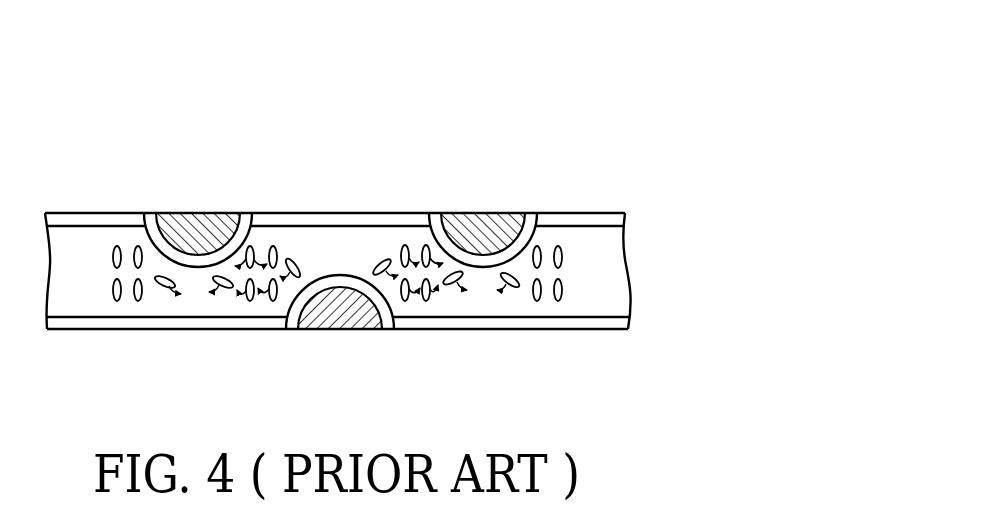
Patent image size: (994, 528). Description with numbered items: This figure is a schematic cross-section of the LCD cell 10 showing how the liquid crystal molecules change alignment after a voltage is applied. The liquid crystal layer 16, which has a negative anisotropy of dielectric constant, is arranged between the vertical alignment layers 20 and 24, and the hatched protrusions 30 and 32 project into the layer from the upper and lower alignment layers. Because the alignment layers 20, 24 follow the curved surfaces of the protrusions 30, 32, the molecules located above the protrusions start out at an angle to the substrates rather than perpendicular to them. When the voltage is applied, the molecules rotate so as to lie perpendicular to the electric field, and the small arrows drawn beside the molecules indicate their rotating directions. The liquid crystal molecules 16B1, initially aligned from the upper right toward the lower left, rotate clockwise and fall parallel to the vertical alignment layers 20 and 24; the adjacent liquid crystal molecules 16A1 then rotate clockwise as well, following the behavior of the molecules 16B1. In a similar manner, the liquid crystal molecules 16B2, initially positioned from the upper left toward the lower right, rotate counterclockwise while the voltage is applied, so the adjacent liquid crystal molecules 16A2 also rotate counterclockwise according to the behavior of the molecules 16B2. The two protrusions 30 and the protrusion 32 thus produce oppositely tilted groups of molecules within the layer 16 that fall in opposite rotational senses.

The LCD cell 10 is at (582, 58).
The liquid crystal layer 16 is at (598, 275).
The liquid crystal molecules 16A1 is at (404, 245).
The liquid crystal molecules 16A2 is at (275, 245).
The liquid crystal molecules 16B1 is at (381, 258).
The liquid crystal molecules 16B2 is at (291, 258).
The vertical alignment layer 20 is at (598, 219).
The vertical alignment layer 24 is at (598, 322).
The protrusion 30 is at (200, 237).
The protrusion 32 is at (343, 318).